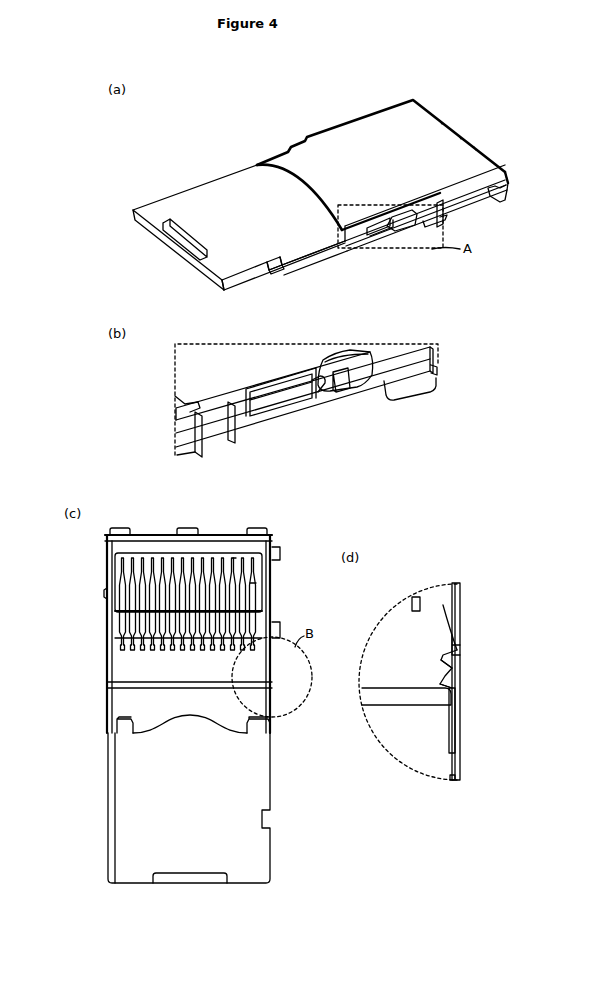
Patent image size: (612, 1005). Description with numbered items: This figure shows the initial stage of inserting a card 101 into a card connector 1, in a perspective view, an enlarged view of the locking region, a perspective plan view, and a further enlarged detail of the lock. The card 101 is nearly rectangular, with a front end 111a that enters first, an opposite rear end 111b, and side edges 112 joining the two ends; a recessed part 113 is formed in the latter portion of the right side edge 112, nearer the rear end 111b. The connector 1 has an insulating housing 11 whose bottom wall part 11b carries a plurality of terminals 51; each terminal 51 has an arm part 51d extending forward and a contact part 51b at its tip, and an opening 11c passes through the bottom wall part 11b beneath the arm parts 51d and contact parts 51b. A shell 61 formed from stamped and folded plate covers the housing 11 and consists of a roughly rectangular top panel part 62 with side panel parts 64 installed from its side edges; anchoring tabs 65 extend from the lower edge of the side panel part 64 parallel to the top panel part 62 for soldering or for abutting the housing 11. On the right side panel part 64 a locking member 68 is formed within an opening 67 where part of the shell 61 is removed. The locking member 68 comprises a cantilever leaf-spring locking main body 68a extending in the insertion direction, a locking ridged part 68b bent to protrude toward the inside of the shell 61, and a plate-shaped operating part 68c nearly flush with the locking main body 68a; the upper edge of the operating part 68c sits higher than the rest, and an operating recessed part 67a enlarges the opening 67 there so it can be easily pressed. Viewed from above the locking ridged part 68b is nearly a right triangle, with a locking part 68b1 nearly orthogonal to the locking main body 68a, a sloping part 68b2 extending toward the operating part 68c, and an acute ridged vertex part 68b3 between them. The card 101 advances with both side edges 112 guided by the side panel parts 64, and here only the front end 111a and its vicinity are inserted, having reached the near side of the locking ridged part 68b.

The card connector 1 is at (474, 108).
The housing 11 is at (143, 553).
The bottom wall part 11b is at (107, 593).
The opening 11c is at (210, 560).
The terminal 51 is at (258, 601).
The contact part 51b is at (236, 558).
The arm part 51d is at (260, 583).
The shell 61 is at (383, 110).
The top panel part 62 is at (472, 162).
The side panel part 64 is at (476, 205).
The anchoring tab 65 is at (417, 397).
The opening 67 is at (362, 358).
The operating recessed part 67a is at (337, 353).
The locking member 68 is at (267, 423).
The locking main body 68a is at (292, 410).
The locking ridged part 68b is at (315, 398).
The locking part 68b1 is at (445, 650).
The sloping part 68b2 is at (443, 678).
The ridged vertex part 68b3 is at (442, 662).
The operating part 68c is at (343, 388).
The card 101 is at (213, 178).
The front end 111a is at (303, 372).
The rear end 111b is at (185, 262).
The side edge 112 is at (316, 260).
The recessed part 113 is at (278, 272).